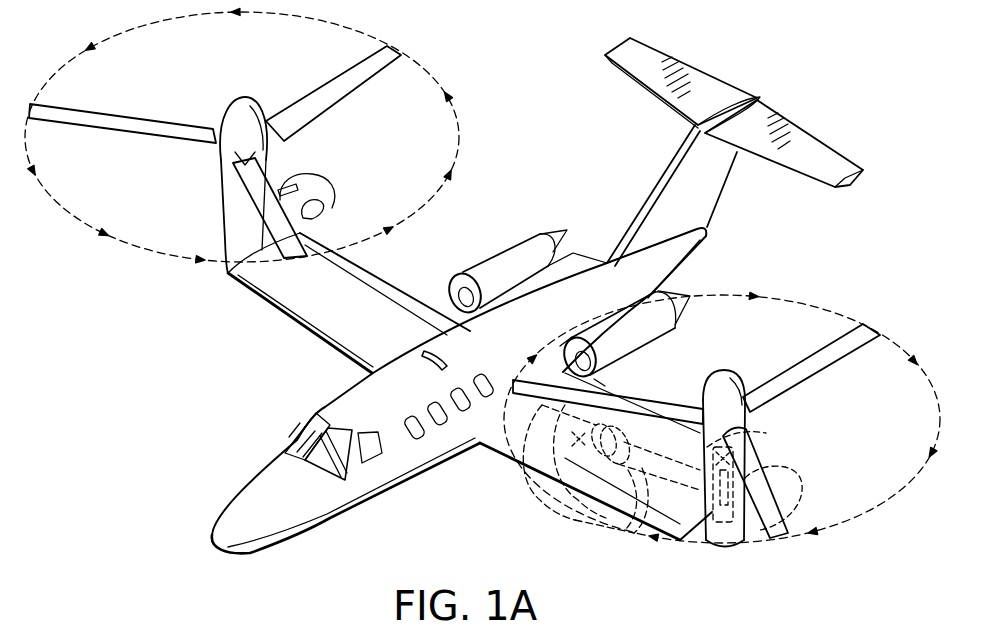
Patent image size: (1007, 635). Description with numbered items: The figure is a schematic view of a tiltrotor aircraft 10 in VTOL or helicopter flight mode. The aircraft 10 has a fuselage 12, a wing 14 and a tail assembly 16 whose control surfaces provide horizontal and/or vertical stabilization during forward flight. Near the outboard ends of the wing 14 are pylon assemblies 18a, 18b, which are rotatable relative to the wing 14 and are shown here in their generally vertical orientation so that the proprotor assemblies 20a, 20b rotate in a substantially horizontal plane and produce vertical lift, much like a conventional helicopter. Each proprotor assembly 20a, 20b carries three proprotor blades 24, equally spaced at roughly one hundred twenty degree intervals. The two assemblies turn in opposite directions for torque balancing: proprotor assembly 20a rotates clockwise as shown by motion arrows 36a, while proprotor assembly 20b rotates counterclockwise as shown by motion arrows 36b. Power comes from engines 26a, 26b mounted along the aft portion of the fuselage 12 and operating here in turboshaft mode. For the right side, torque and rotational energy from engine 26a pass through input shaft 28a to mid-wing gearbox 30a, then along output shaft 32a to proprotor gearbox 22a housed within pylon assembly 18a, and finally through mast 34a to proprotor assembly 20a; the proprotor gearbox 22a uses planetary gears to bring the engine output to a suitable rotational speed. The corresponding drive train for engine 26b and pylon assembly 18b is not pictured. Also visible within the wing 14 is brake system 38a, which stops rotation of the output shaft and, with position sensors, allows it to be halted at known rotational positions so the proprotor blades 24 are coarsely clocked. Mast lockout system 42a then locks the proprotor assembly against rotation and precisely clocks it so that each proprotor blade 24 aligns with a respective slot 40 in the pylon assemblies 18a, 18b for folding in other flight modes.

The tiltrotor aircraft 10 is at (835, 101).
The fuselage 12 is at (300, 512).
The wing 14 is at (333, 327).
The tail assembly 16 is at (708, 87).
The pylon assembly 18a is at (720, 547).
The pylon assembly 18b is at (222, 192).
The proprotor assembly 20a is at (838, 364).
The proprotor assembly 20b is at (191, 119).
The proprotor gearbox 22a is at (760, 541).
The proprotor blades 24 is at (318, 98).
The engine 26a is at (637, 346).
The engine 26b is at (513, 252).
The input shaft 28a is at (497, 464).
The mid-wing gearbox 30a is at (525, 498).
The output shaft 32a is at (632, 548).
The mast 34a is at (742, 434).
The motion arrows 36a is at (806, 300).
The motion arrows 36b is at (463, 128).
The brake system 38a is at (572, 528).
The slot 40 is at (292, 172).
The mast lockout system 42a is at (797, 470).